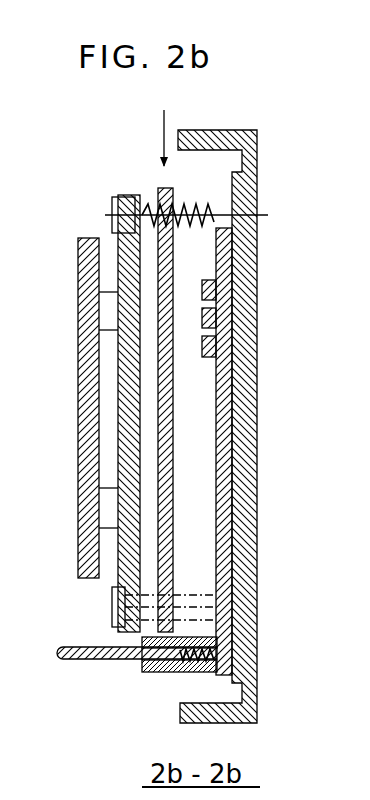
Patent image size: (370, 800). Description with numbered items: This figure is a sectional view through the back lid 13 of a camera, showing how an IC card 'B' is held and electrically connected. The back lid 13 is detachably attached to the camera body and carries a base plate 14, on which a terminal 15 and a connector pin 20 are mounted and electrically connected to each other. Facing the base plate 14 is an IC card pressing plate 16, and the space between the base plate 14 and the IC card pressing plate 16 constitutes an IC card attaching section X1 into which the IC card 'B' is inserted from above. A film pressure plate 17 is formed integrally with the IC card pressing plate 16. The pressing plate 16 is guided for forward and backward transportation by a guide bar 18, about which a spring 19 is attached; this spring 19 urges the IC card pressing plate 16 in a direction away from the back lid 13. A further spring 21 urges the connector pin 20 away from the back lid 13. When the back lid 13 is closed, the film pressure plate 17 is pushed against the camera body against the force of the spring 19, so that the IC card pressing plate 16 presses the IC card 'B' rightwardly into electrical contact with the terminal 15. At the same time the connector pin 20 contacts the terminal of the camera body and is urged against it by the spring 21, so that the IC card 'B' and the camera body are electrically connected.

The back lid 13 is at (245, 430).
The base plate 14 is at (222, 510).
The terminal 15 is at (205, 316).
The IC card pressing plate 16 is at (127, 437).
The film pressure plate 17 is at (90, 372).
The guide bar 18 is at (112, 215).
The spring 19 is at (200, 203).
The connector pin 20 is at (80, 658).
The spring 21 is at (218, 657).
The IC card B is at (172, 390).
The IC card attaching section X1 is at (183, 282).